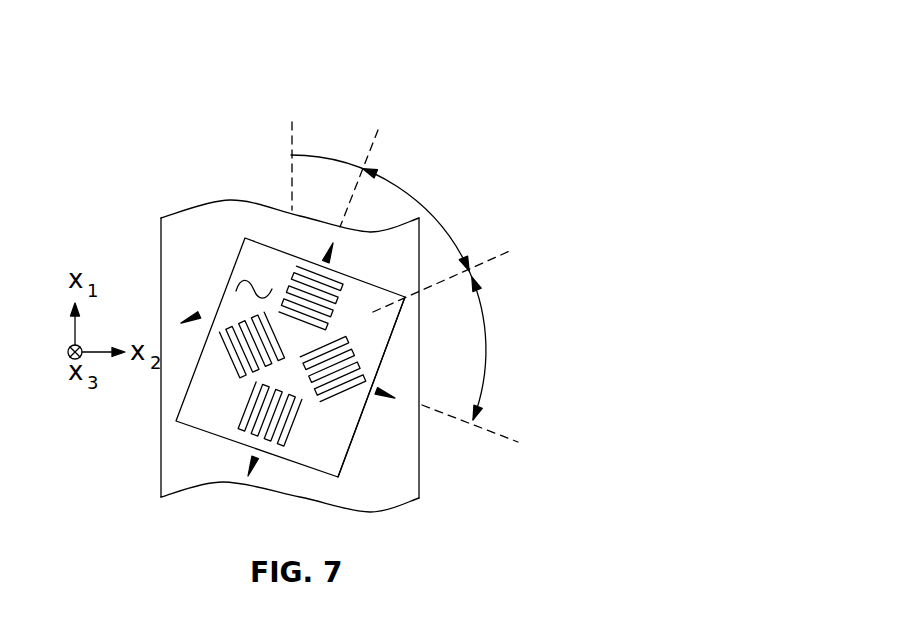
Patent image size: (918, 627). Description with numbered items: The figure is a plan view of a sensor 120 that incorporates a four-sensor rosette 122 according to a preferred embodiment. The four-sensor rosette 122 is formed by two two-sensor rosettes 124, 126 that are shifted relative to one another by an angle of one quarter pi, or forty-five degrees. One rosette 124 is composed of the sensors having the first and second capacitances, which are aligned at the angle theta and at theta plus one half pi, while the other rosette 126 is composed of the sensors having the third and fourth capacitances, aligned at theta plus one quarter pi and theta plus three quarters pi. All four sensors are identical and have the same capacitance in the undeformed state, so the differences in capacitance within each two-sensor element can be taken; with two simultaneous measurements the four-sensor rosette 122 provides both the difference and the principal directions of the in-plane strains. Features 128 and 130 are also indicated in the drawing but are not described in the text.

The sensor 120 is at (528, 150).
The four-sensor rosette 122 is at (203, 218).
The two-sensor rosette 124 is at (203, 408).
The two-sensor rosette 126 is at (325, 418).
The wave / strain gauge pattern 128 is at (243, 279).
The substrate edge 130 is at (417, 480).